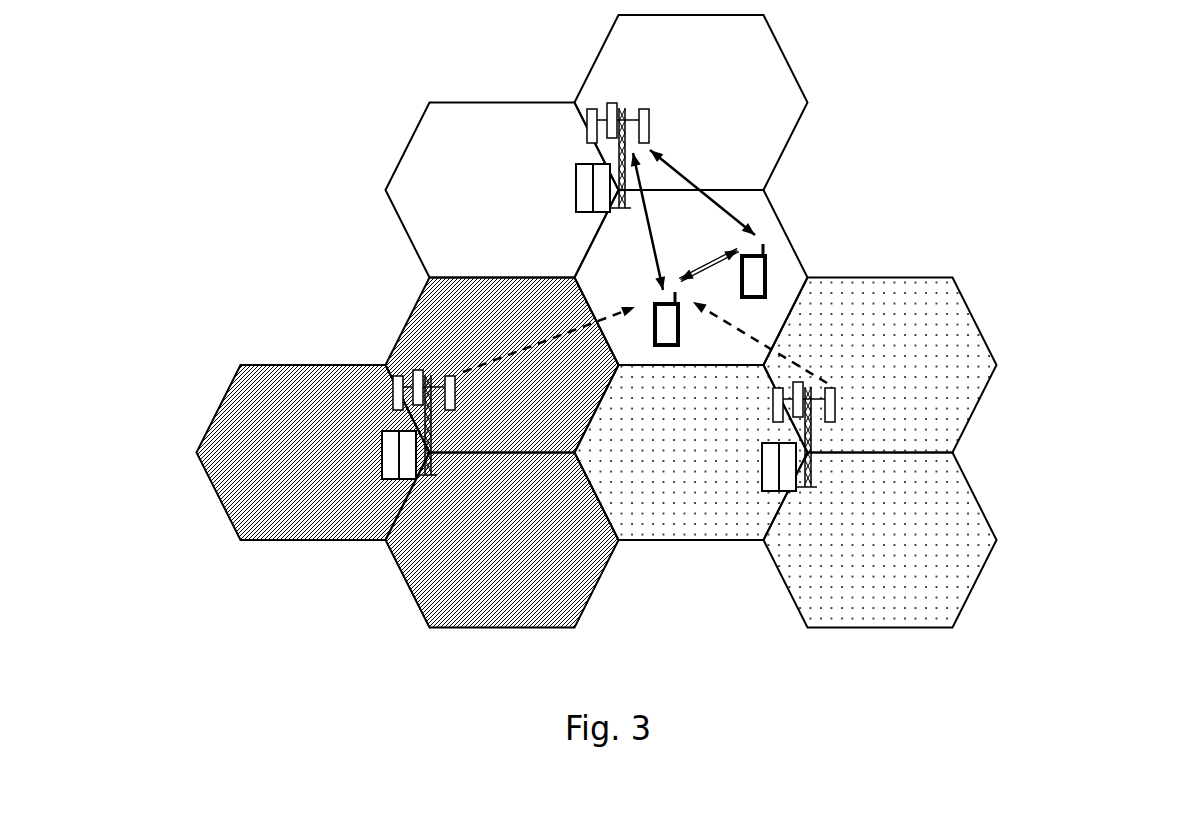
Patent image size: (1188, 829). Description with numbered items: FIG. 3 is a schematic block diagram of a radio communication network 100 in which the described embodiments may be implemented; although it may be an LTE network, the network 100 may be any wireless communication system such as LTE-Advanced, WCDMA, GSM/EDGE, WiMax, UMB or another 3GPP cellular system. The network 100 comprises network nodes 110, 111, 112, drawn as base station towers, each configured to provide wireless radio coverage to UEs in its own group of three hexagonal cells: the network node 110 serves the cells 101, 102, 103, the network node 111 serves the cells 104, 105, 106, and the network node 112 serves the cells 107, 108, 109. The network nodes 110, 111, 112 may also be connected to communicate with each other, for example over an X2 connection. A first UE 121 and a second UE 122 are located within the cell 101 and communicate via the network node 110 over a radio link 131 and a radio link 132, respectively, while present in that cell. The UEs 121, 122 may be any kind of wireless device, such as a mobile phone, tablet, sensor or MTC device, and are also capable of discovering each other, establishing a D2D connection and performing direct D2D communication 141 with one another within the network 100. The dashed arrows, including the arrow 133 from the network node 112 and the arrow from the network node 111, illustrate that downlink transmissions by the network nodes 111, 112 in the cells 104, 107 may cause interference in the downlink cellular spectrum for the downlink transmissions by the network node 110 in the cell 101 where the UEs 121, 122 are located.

The radio communication network 100 is at (670, 355).
The cell 101 is at (733, 357).
The cell 102 is at (480, 133).
The cell 103 is at (668, 50).
The cell 104 is at (855, 314).
The cell 105 is at (705, 534).
The cell 106 is at (855, 624).
The cell 107 is at (480, 308).
The cell 108 is at (288, 392).
The cell 109 is at (480, 623).
The network node 110 is at (577, 192).
The network node 111 is at (813, 485).
The network node 112 is at (383, 455).
The first user equipment 121 is at (653, 347).
The second user equipment 122 is at (773, 254).
The radio link 131 is at (643, 223).
The radio link 132 is at (673, 165).
The communication link 133 is at (492, 358).
The D2D communication 141 is at (727, 257).